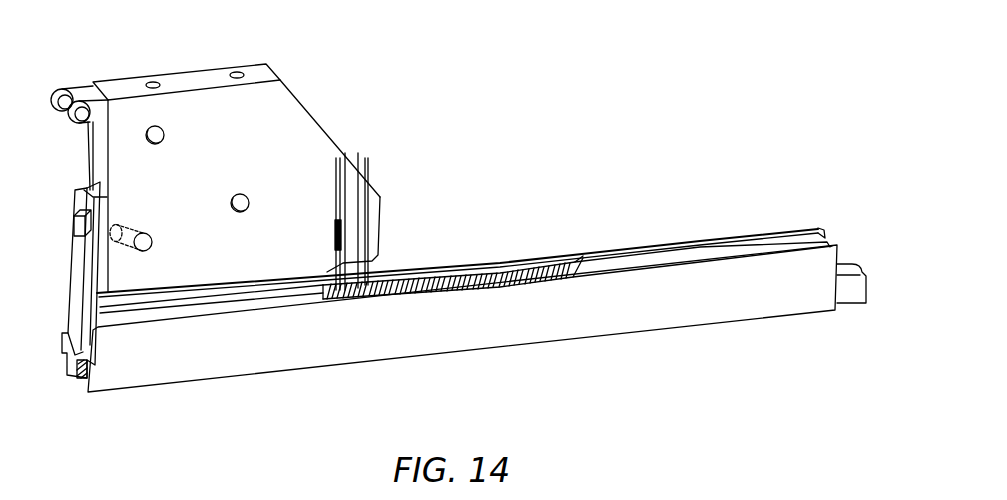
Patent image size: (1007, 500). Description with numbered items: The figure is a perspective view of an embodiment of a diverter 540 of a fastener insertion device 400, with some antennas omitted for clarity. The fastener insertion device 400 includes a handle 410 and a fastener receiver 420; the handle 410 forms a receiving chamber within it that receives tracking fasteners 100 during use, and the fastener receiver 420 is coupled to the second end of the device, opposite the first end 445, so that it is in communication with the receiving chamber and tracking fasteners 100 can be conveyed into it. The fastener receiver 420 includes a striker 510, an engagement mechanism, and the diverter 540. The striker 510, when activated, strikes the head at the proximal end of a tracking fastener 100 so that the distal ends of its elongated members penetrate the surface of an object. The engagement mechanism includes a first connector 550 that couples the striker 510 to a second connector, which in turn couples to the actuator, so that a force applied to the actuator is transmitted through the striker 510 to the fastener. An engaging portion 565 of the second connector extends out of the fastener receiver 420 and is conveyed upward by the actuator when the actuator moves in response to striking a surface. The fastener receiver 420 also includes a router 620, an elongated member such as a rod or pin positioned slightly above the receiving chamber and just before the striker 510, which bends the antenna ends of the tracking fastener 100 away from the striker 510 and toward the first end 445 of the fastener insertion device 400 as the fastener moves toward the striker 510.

The fastener insertion device 400 is at (549, 72).
The handle 410 is at (572, 343).
The tracking fastener 100 is at (540, 262).
The first end 445 is at (856, 304).
The fastener receiver 420 is at (193, 73).
The diverter 540 is at (380, 223).
The engaging portion 565 is at (63, 88).
The first connector 550 is at (72, 223).
The striker 510 is at (75, 293).
The router 620 is at (152, 243).